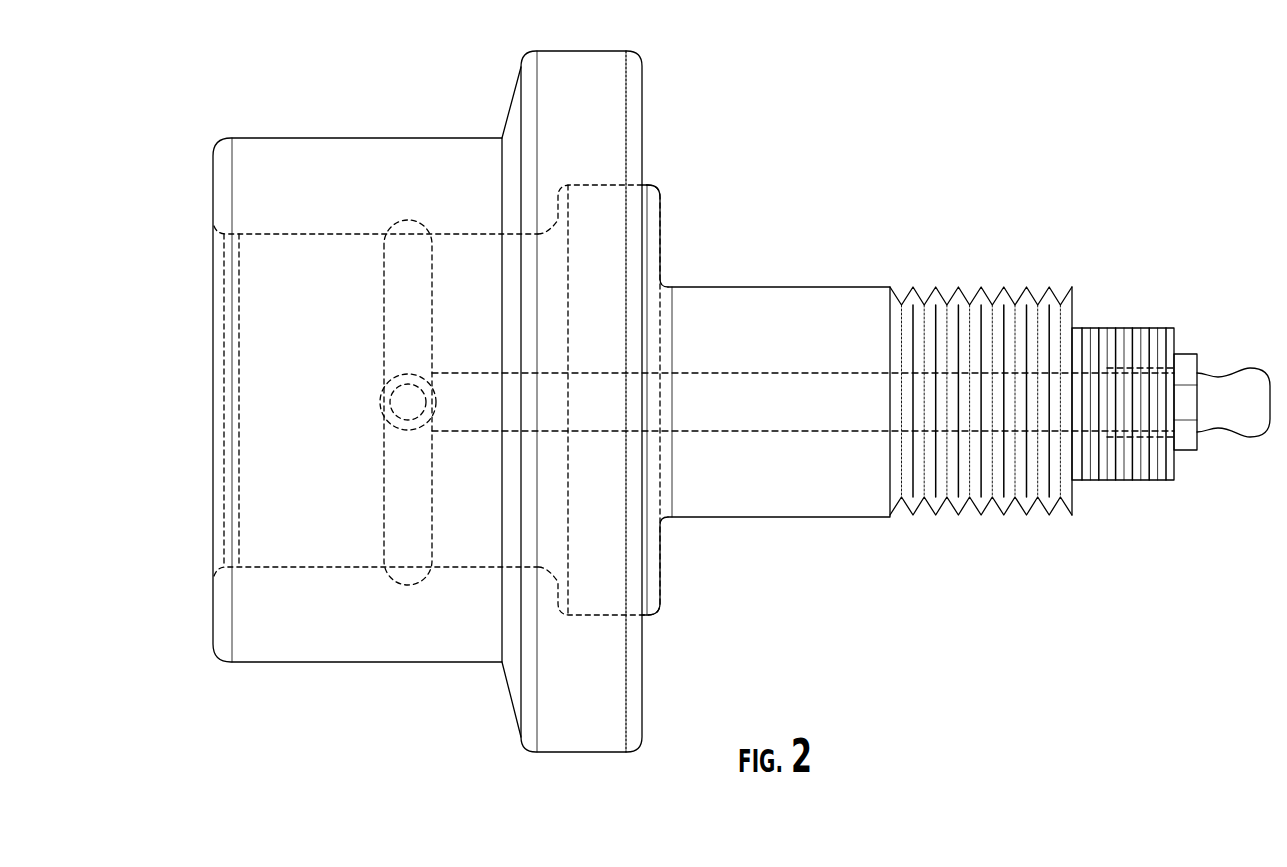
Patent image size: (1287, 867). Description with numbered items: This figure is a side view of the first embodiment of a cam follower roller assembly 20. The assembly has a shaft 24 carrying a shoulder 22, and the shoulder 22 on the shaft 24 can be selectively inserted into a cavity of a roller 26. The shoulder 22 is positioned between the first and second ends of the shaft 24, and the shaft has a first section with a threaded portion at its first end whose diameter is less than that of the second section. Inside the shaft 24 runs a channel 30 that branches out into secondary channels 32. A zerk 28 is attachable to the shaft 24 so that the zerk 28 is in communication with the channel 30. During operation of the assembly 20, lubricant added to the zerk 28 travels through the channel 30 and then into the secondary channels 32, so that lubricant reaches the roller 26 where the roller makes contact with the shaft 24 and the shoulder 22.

The cam follower roller assembly 20 is at (714, 400).
The shoulder 22 is at (647, 218).
The shaft 24 is at (783, 287).
The roller 26 is at (280, 170).
The zerk 28 is at (1223, 378).
The channel 30 is at (913, 418).
The secondary channels 32 is at (418, 257).